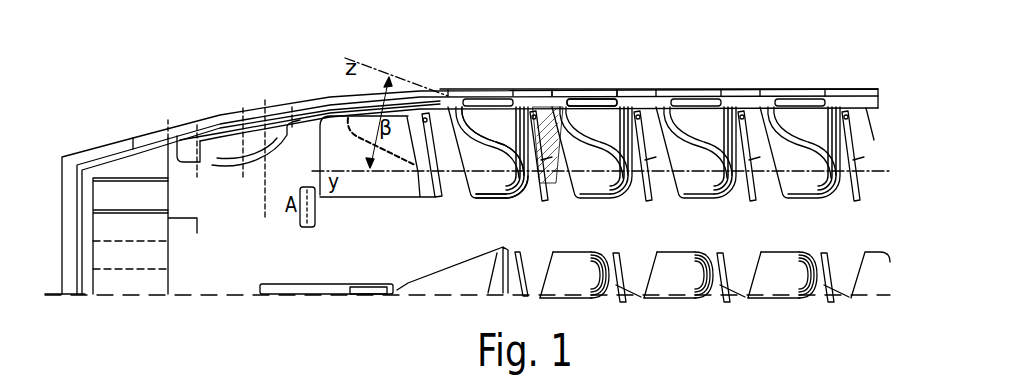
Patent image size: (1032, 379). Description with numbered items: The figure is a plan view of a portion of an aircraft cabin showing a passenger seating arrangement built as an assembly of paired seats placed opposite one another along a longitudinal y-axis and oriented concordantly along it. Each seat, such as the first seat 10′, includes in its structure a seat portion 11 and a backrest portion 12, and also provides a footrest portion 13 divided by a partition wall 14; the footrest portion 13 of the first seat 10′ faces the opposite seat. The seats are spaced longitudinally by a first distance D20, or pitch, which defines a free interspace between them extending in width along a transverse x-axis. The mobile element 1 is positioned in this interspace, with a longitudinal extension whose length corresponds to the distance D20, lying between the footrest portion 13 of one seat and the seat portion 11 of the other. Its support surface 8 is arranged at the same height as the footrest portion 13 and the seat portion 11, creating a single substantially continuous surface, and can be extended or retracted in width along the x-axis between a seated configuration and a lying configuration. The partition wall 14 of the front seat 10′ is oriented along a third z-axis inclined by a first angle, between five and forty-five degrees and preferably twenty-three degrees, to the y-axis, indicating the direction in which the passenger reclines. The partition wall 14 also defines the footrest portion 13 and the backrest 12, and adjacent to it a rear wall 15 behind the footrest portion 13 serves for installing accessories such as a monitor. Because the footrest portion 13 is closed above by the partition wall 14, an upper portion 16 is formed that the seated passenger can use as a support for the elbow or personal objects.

The mobile element 1 is at (534, 90).
The first seat 10′ is at (451, 86).
The support surface 8 is at (616, 190).
The seat portion 11 is at (493, 186).
The backrest portion 12 is at (522, 188).
The footrest portion 13 is at (492, 115).
The partition wall 14 is at (488, 145).
The rear wall 15 is at (540, 194).
The upper portion 16 is at (480, 122).
The first distance D20 is at (540, 130).